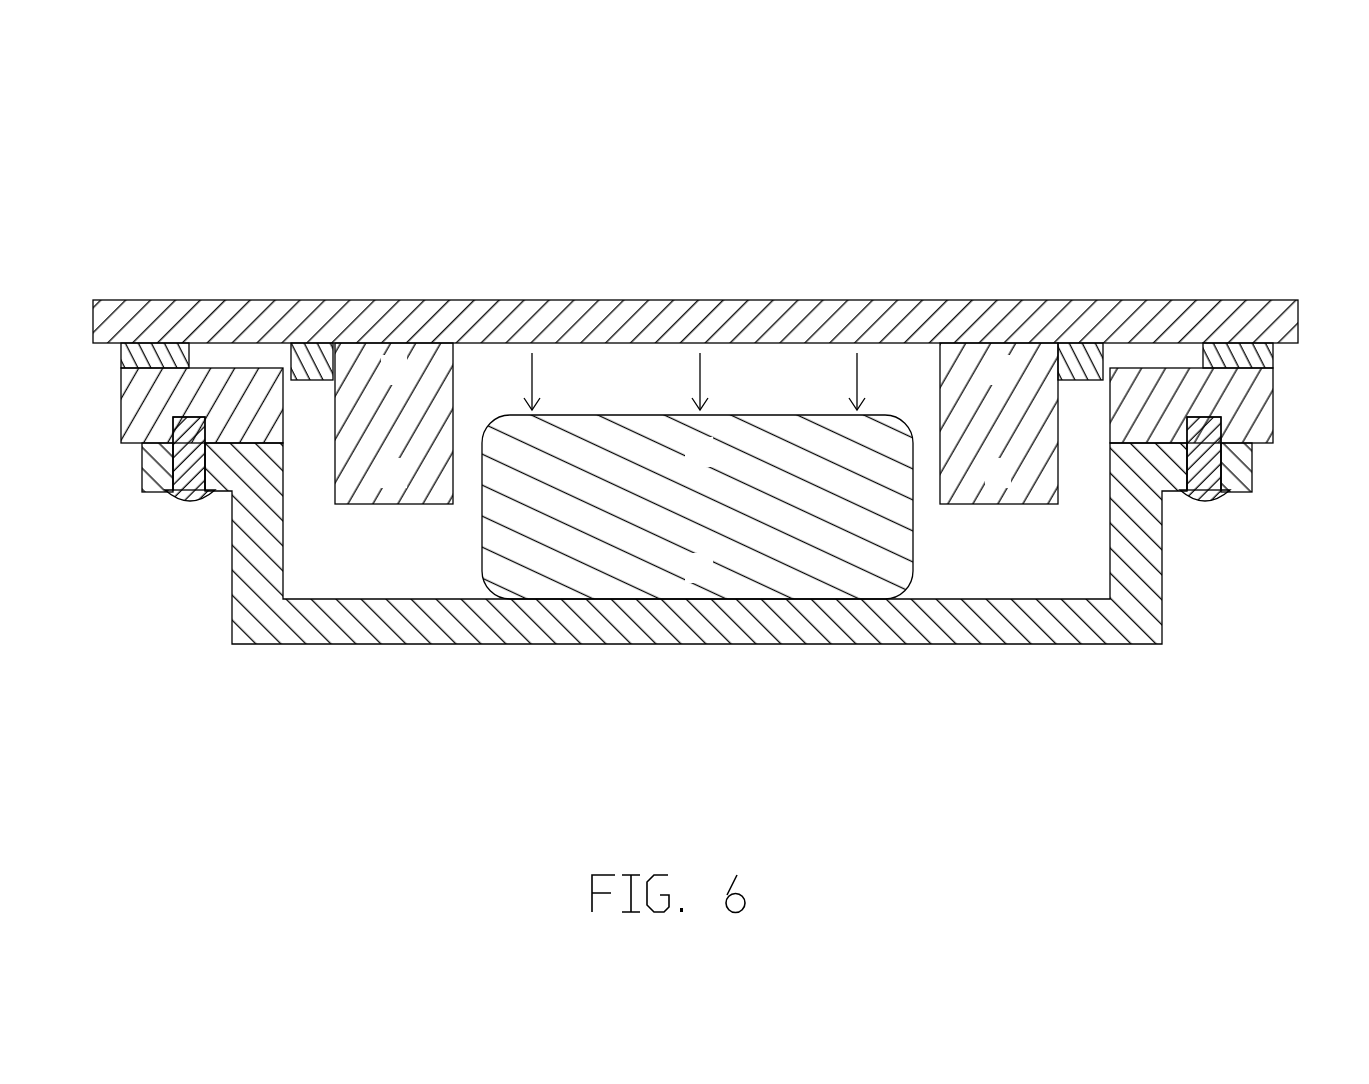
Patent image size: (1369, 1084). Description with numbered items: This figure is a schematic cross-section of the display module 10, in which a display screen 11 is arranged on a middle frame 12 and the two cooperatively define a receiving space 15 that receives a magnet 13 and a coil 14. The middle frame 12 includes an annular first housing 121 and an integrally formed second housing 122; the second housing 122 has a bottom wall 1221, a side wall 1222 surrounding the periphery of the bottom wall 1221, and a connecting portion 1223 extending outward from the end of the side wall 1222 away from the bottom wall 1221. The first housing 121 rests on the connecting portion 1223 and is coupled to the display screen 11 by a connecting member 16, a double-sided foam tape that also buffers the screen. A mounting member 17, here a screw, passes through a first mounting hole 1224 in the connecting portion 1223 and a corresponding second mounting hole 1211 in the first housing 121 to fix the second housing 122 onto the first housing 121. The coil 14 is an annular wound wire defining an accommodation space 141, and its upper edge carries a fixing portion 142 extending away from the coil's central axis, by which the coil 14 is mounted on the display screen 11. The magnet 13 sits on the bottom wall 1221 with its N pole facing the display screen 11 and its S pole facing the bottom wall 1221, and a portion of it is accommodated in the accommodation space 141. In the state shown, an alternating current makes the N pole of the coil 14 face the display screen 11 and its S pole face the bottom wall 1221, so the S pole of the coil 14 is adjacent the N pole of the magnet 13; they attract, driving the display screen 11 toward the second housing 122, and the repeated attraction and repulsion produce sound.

The display module 10 is at (684, 115).
The display screen 11 is at (188, 323).
The middle frame 12 is at (1290, 530).
The first housing 121 is at (143, 405).
The second mounting hole 1211 is at (1222, 423).
The second housing 122 is at (165, 722).
The bottom wall 1221 is at (377, 632).
The side wall 1222 is at (265, 568).
The connecting portion 1223 is at (155, 475).
The first mounting hole 1224 is at (1222, 468).
The magnet 13 is at (600, 587).
The coil 14 is at (402, 432).
The accommodation space 141 is at (621, 382).
The fixing portion 142 is at (310, 358).
The receiving space 15 is at (1013, 567).
The connecting member 16 is at (1227, 357).
The mounting member 17 is at (1198, 493).